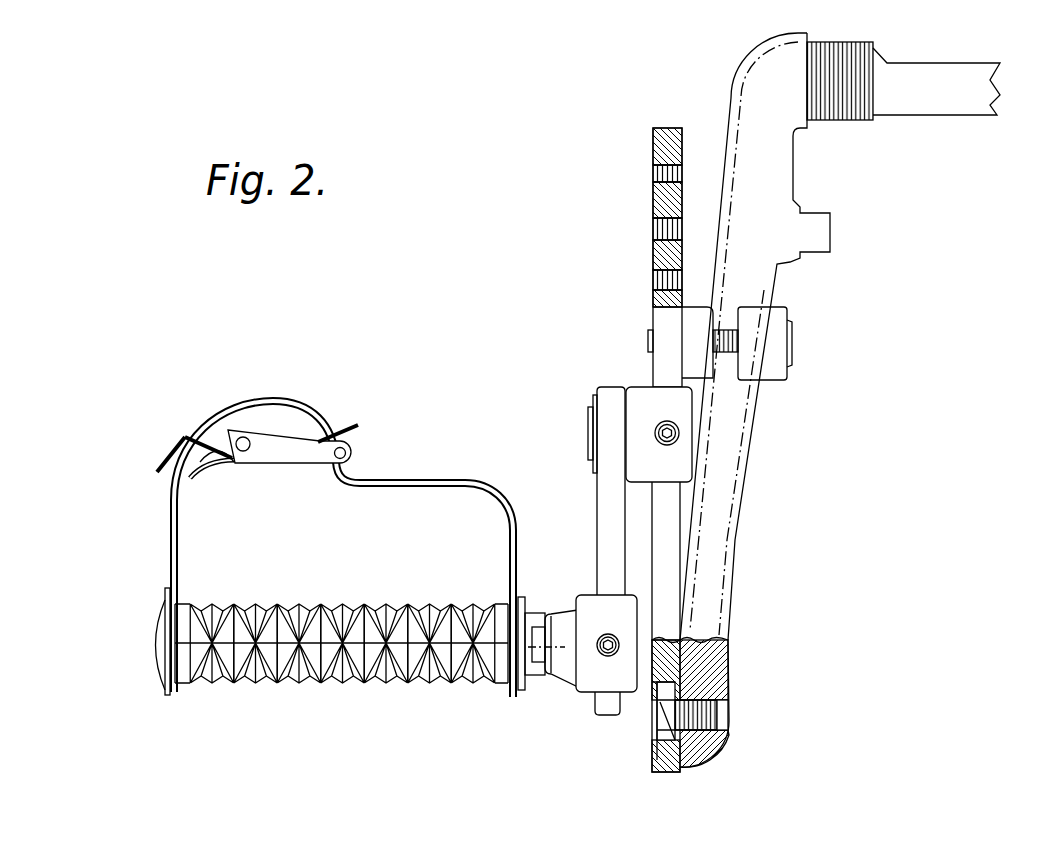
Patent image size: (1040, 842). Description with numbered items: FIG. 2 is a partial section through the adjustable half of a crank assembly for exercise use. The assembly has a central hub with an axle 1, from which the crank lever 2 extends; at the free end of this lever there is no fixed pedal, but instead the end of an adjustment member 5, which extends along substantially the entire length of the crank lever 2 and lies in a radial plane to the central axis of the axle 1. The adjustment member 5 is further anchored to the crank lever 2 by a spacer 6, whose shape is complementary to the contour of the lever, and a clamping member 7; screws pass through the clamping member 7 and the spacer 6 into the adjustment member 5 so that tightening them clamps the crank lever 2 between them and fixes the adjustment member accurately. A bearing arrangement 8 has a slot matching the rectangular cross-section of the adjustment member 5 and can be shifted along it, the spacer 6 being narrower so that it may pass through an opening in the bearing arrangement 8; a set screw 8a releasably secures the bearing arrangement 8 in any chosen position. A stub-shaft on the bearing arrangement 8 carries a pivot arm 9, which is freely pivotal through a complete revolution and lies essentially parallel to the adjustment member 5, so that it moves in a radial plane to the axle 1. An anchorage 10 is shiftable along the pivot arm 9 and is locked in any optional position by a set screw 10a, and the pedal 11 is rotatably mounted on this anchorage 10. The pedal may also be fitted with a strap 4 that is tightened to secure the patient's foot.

The axle 1 is at (943, 92).
The crank lever 2 is at (730, 525).
The strap 4 is at (173, 522).
The adjustment member 5 is at (668, 322).
The spacer 6 is at (702, 300).
The clamping member 7 is at (773, 357).
The bearing arrangement 8 is at (638, 397).
The set screw 8a is at (657, 433).
The pivot arm 9 is at (607, 523).
The anchorage 10 is at (590, 612).
The set screw 10a is at (600, 652).
The pedal 11 is at (345, 667).